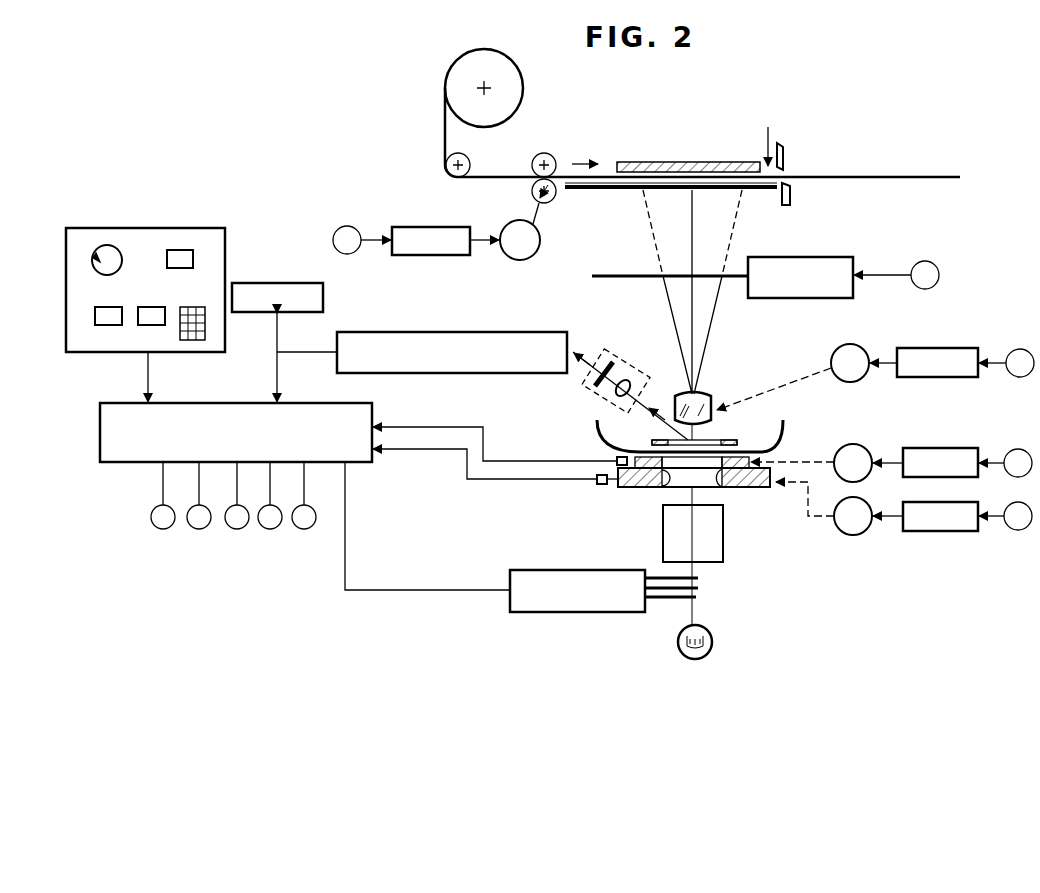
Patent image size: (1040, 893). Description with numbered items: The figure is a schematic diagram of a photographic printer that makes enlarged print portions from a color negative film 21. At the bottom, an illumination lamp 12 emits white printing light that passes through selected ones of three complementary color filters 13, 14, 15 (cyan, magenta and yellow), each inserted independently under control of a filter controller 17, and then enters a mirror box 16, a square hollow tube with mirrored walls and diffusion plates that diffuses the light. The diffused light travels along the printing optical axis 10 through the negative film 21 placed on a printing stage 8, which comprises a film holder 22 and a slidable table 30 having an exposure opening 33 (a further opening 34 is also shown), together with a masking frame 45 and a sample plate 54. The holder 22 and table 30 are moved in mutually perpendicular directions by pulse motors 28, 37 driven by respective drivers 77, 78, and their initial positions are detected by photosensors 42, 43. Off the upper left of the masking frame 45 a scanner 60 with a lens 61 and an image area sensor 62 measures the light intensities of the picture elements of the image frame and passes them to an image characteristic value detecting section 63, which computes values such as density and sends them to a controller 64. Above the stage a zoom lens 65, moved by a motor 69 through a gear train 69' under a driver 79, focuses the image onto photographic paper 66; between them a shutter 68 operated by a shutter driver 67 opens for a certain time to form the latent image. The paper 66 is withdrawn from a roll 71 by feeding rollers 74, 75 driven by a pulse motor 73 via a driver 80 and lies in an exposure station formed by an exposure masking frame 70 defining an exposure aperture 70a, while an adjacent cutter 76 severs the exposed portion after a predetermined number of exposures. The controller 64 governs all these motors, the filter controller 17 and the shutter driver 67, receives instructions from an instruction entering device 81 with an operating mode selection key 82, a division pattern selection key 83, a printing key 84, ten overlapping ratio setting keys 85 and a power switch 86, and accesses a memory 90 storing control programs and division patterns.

The printing stage 8 is at (773, 493).
The printing optical axis 10 is at (700, 572).
The illumination lamp 12 is at (713, 642).
The cyan color filter 13 is at (663, 601).
The magenta color filter 14 is at (700, 598).
The yellow color filter 15 is at (700, 585).
The mirror box 16 is at (718, 545).
The filter controller 17 is at (580, 613).
The color negative film 21 is at (782, 428).
The film holder 22 is at (660, 458).
The pulse motor 28 is at (858, 445).
The slidable table 30 is at (748, 490).
The exposure opening 33 is at (665, 490).
The lens 34 is at (722, 490).
The pulse motor 37 is at (853, 535).
The photosensor 42 is at (620, 466).
The photosensor 43 is at (598, 484).
The masking frame 45 is at (737, 440).
The sample 54 is at (718, 443).
The scanner 60 is at (622, 357).
The lens 61 is at (630, 383).
The image area sensor 62 is at (606, 362).
The image characteristic value detecting section 63 is at (445, 332).
The controller 64 is at (118, 466).
The zoom lens 65 is at (705, 398).
The photographic paper 66 is at (872, 176).
The shutter driver 67 is at (818, 257).
The shutter 68 is at (712, 278).
The motor 69 is at (862, 340).
The gear train 69' is at (774, 365).
The exposure masking frame 70 is at (758, 191).
The exposure aperture 70a is at (643, 192).
The roll 71 is at (521, 80).
The pulse motor 73 is at (540, 250).
The feeding roller 74 is at (551, 201).
The feeding roller 75 is at (545, 152).
The cutter 76 is at (780, 143).
The driver 77 is at (936, 448).
The driver 78 is at (945, 531).
The driver 79 is at (945, 348).
The driver 80 is at (428, 226).
The instruction entering device 81 is at (148, 226).
The operating mode selection key 82 is at (180, 257).
The division pattern selection key 83 is at (110, 246).
The printing key 84 is at (108, 326).
The overlapping ratio setting keys 85 is at (195, 341).
The power switch 86 is at (155, 326).
The memory 90 is at (280, 282).